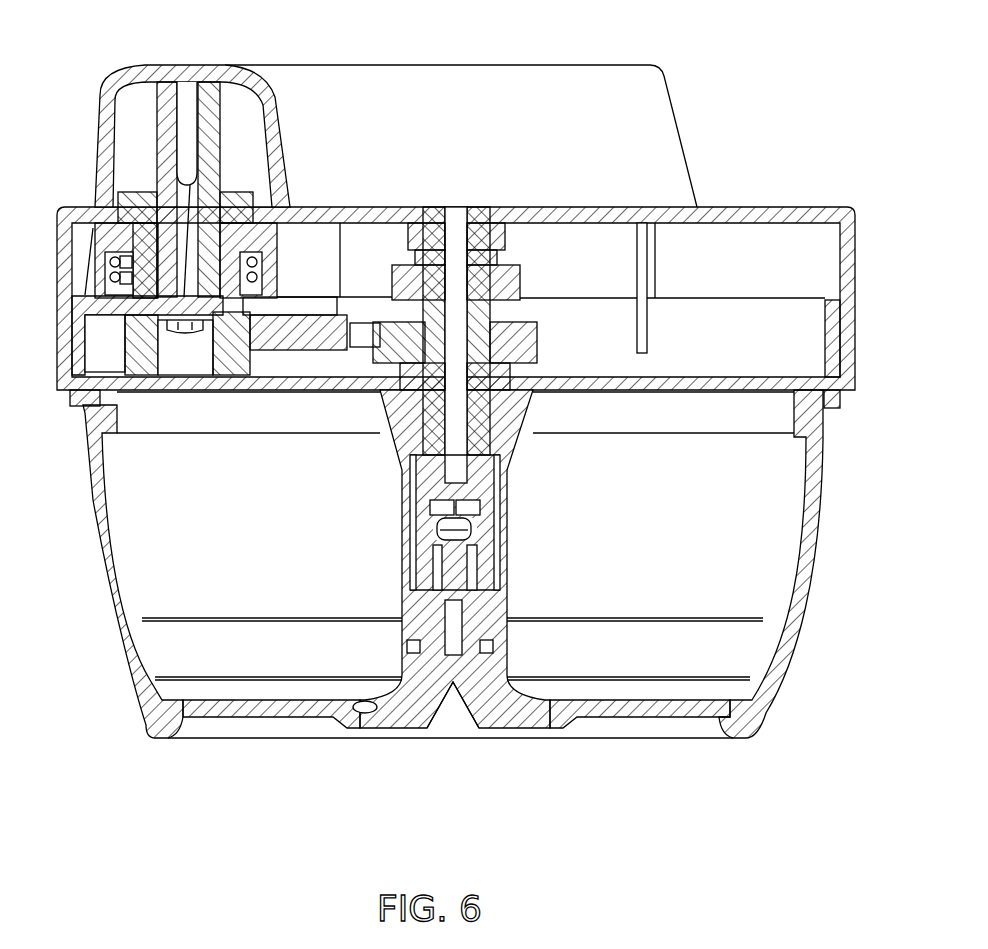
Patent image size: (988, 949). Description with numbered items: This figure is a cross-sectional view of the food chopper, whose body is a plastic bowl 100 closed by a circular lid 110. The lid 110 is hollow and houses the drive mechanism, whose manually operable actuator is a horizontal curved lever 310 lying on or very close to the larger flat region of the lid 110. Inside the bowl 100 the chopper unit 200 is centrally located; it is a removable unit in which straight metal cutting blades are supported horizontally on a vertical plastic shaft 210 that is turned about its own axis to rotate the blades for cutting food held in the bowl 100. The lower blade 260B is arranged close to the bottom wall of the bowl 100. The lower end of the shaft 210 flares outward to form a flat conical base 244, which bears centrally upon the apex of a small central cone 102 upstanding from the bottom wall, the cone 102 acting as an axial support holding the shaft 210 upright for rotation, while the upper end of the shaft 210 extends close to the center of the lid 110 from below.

The lever 310 is at (355, 97).
The lid 110 is at (733, 208).
The shaft 210 is at (500, 513).
The bowl 100 is at (812, 584).
The chopper unit 200 is at (337, 567).
The lower blade 260B is at (215, 622).
The conical base 244 is at (396, 697).
The cone 102 is at (453, 690).